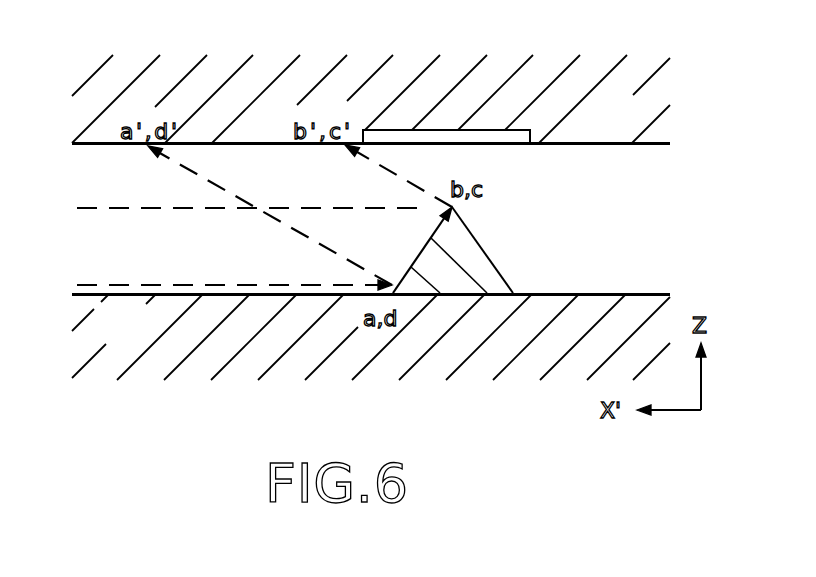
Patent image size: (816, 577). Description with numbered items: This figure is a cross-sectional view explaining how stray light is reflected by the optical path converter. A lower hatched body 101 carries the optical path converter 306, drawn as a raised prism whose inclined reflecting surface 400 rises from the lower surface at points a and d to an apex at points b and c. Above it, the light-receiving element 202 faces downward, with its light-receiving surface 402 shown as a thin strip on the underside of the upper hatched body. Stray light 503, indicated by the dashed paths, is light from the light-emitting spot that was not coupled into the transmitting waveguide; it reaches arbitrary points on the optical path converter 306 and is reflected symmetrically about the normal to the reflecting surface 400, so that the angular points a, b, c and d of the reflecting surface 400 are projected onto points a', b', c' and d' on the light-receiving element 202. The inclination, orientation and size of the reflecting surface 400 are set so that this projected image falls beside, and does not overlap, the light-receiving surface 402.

The first substrate 101 is at (142, 336).
The light-receiving element 202 is at (633, 128).
The optical path converter 306 is at (489, 258).
The reflecting surface 400 is at (420, 251).
The light-receiving surface 402 is at (432, 130).
The stray light 503 is at (360, 157).